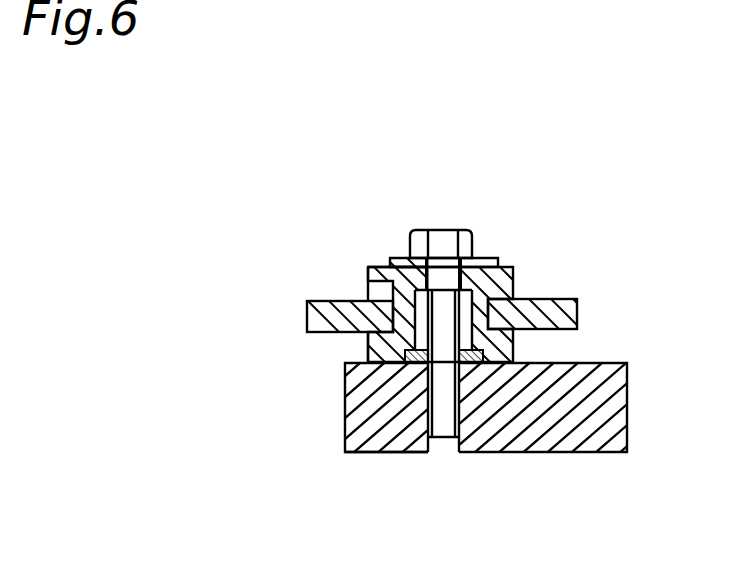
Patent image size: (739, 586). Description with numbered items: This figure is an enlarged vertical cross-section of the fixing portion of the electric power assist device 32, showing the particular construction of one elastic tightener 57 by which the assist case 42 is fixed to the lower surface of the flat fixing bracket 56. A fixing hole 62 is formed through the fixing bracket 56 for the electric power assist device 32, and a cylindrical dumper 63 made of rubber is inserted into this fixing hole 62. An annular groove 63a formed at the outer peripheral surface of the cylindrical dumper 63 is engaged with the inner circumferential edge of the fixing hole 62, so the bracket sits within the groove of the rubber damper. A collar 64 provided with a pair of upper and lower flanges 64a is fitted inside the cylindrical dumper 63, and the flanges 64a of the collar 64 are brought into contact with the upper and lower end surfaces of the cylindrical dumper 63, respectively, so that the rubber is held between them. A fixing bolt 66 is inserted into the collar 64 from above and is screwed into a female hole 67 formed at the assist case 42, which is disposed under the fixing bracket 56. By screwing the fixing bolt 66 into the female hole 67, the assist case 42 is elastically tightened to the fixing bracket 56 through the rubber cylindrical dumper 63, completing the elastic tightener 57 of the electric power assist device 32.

The electric power assist device 32 is at (326, 427).
The assist case 42 is at (360, 455).
The fixing bracket 56 is at (308, 313).
The elastic tightener 57 is at (343, 252).
The fixing hole 62 is at (497, 312).
The cylindrical dumper 63 is at (468, 335).
The annular groove 63a is at (477, 352).
The collar 64 is at (418, 284).
The flanges 64a is at (367, 273).
The fixing bolt 66 is at (441, 418).
The female hole 67 is at (462, 407).